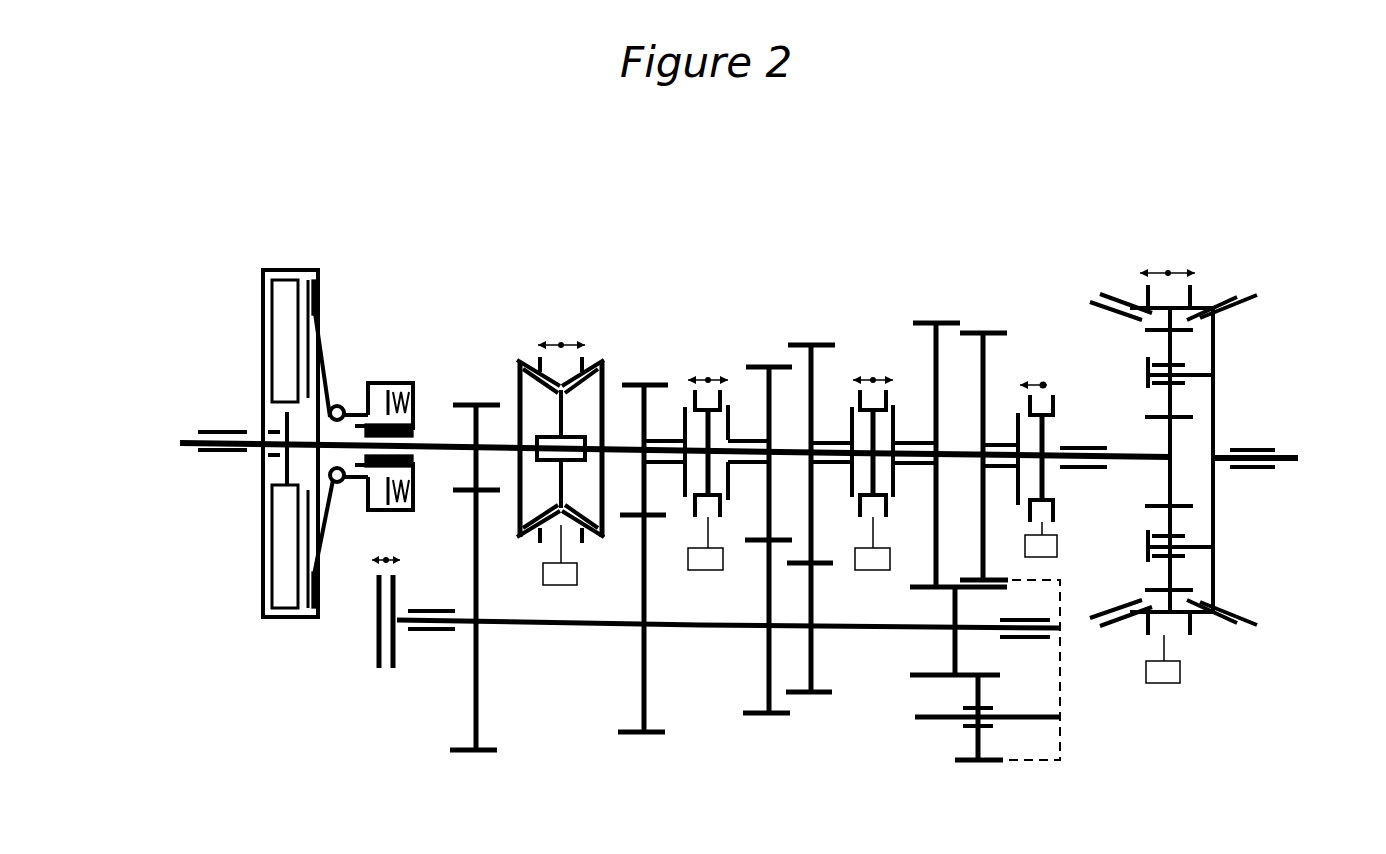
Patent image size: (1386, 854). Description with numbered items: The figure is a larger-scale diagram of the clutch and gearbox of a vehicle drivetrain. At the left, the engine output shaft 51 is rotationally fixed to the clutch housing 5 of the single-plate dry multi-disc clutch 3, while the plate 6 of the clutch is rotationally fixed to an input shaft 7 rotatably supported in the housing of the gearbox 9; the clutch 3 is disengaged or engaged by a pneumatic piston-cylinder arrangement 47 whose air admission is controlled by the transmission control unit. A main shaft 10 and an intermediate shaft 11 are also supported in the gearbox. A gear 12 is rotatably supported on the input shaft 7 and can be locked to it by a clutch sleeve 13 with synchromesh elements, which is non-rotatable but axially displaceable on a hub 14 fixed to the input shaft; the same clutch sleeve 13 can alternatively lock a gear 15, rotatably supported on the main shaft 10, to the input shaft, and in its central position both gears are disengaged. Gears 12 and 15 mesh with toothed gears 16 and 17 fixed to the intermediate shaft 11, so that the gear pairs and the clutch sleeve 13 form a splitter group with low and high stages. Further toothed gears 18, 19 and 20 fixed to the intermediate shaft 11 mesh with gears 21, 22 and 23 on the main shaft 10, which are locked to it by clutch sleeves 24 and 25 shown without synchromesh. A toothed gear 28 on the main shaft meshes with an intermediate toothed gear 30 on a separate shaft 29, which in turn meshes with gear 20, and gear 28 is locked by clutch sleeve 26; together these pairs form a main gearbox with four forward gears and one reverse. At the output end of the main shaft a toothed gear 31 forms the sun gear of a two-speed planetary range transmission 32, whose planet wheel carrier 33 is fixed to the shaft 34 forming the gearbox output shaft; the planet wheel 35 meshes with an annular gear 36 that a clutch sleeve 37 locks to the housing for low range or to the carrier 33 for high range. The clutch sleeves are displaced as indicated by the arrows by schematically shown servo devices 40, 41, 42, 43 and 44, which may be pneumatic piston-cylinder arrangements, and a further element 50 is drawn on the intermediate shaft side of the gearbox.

The multi-disc clutch 3 is at (288, 418).
The clutch housing 5 is at (262, 286).
The plate 6 is at (289, 343).
The input shaft 7 is at (307, 437).
The gearbox 9 is at (803, 252).
The main shaft 10 is at (1133, 455).
The intermediate shaft 11 is at (548, 628).
The gear 12 is at (470, 400).
The clutch sleeve 13 is at (597, 357).
The hub 14 is at (557, 413).
The gear 15 is at (646, 382).
The toothed gear 16 is at (472, 708).
The toothed gear 17 is at (641, 688).
The toothed gear 18 is at (764, 676).
The toothed gear 19 is at (813, 665).
The toothed gear 20 is at (922, 678).
The gear 21 is at (768, 346).
The gear 22 is at (800, 345).
The gear 23 is at (932, 322).
The clutch sleeve 24 is at (748, 394).
The clutch sleeve 25 is at (913, 394).
The clutch sleeve 26 is at (1058, 403).
The toothed gear 28 is at (988, 330).
The separate shaft 29 is at (917, 716).
The intermediate toothed gear 30 is at (985, 696).
The toothed gear 31 is at (1157, 508).
The range transmission 32 is at (1201, 427).
The planet wheel carrier 33 is at (1215, 355).
The shaft 34 is at (1300, 452).
The planet wheel 35 is at (1178, 497).
The annular gear 36 is at (1178, 588).
The clutch sleeve 37 is at (1195, 300).
The servo device 40 is at (560, 555).
The servo device 41 is at (705, 543).
The servo device 42 is at (872, 543).
The servo device 43 is at (1041, 539).
The servo device 44 is at (1163, 659).
The pneumatic piston-cylinder arrangement 47 is at (382, 512).
The power take-off clutch 50 is at (350, 654).
The engine output shaft 51 is at (196, 437).